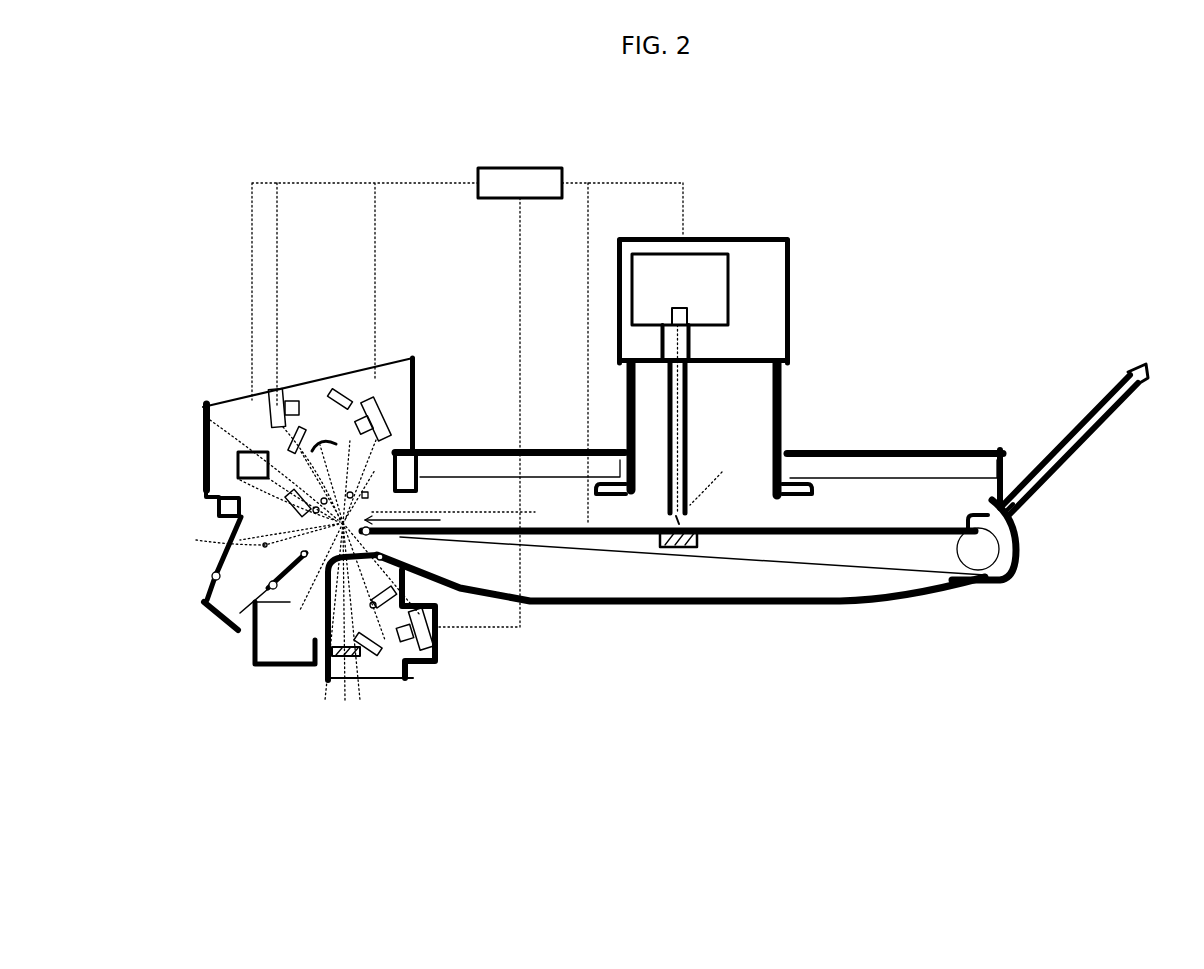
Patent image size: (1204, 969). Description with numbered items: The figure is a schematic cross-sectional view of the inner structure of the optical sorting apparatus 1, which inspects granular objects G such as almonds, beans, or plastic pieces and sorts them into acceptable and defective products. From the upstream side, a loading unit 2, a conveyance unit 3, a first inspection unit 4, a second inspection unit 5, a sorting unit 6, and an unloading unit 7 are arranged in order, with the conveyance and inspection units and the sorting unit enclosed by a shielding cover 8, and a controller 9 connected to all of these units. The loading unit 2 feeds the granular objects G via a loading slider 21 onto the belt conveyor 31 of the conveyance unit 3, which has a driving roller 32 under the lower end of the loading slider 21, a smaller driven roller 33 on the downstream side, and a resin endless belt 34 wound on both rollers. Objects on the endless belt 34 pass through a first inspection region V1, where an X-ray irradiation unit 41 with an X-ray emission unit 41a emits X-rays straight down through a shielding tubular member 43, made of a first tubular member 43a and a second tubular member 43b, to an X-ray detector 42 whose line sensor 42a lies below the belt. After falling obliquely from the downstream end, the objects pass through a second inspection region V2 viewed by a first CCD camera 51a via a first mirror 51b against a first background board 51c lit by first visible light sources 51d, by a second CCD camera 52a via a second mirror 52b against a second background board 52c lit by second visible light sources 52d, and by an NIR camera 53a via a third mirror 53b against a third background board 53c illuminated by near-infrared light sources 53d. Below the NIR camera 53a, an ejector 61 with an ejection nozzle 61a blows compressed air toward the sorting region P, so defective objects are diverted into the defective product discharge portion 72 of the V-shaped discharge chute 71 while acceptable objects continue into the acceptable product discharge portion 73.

The optical sorting apparatus 1 is at (666, 457).
The loading unit 2 is at (1101, 394).
The conveyance unit 3 is at (713, 584).
The first inspection unit 4 is at (750, 334).
The second inspection unit 5 is at (377, 384).
The sorting unit 6 is at (202, 463).
The unloading unit 7 is at (224, 611).
The shielding cover 8 is at (900, 452).
The controller 9 is at (565, 172).
The loading slider 21 is at (1080, 440).
The belt conveyor 31 is at (781, 562).
The driving roller 32 is at (1005, 578).
The driven roller 33 is at (392, 535).
The endless belt 34 is at (620, 548).
The X-ray irradiation unit 41 is at (704, 250).
The X-ray emission unit 41a is at (690, 320).
The X-ray detector 42 is at (682, 489).
The line sensor 42a is at (700, 548).
The shielding tubular member 43 is at (763, 351).
The first tubular member 43a is at (700, 345).
The second tubular member 43b is at (692, 395).
The first CCD camera 51a is at (390, 412).
The first mirror 51b is at (270, 392).
The first background board 51c is at (398, 595).
The first visible light sources 51d is at (300, 610).
The second CCD camera 52a is at (432, 645).
The second mirror 52b is at (352, 660).
The second background board 52c is at (322, 436).
The second visible light sources 52d is at (290, 493).
The NIR camera 53a is at (298, 426).
The third mirror 53b is at (338, 396).
The third background board 53c is at (362, 655).
The near-infrared light sources 53d is at (284, 430).
The ejector 61 is at (236, 462).
The ejection nozzle 61a is at (218, 493).
The discharge chute 71 is at (212, 571).
The defective product discharge portion 72 is at (397, 676).
The acceptable product discharge portion 73 is at (250, 624).
The granular objects G is at (375, 500).
The sorting region P is at (222, 540).
The first inspection region V1 is at (719, 475).
The second inspection region V2 is at (469, 512).